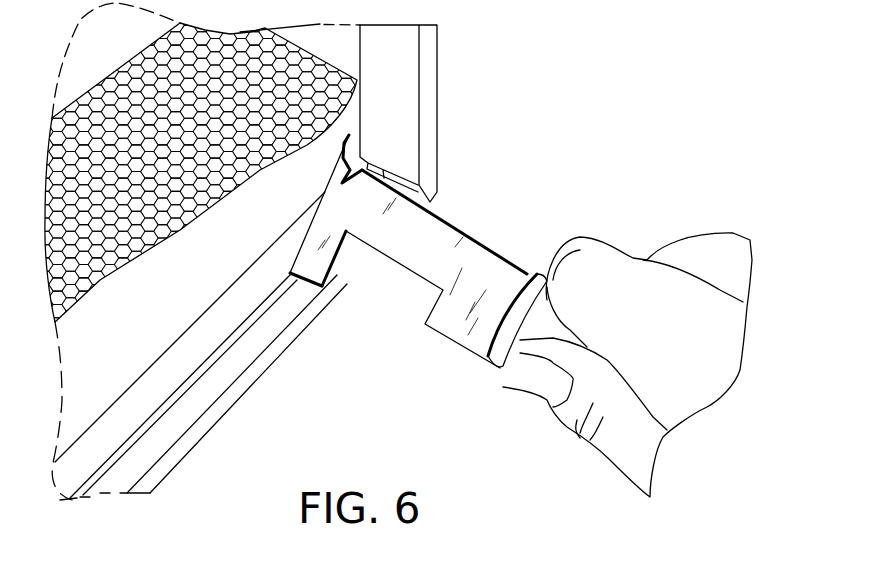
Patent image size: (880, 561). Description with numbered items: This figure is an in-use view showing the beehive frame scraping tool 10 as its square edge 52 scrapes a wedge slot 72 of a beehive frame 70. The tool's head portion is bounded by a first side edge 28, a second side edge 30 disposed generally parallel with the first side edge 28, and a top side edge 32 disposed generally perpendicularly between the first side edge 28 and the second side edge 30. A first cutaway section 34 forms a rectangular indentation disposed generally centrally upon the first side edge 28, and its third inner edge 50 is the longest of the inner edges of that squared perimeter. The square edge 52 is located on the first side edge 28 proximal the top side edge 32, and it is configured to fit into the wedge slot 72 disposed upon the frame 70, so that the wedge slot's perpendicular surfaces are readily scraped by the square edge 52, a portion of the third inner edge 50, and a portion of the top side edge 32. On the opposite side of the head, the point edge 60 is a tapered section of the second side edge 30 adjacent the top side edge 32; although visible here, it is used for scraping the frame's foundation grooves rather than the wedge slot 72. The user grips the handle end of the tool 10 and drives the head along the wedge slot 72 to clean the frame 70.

The beehive frame scraping tool 10 is at (418, 252).
The first side edge 28 is at (440, 330).
The second side edge 30 is at (452, 214).
The top side edge 32 is at (300, 248).
The first cutaway section 34 is at (390, 284).
The third inner edge 50 is at (343, 270).
The square edge 52 is at (301, 285).
The point edge 60 is at (350, 135).
The frame 70 is at (415, 58).
The wedge slot 72 is at (180, 415).